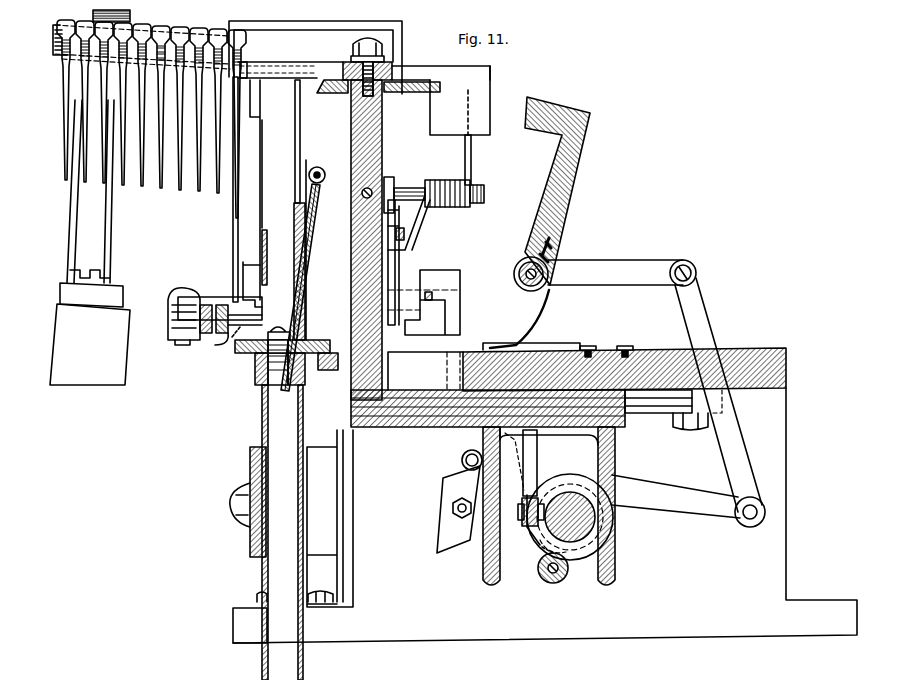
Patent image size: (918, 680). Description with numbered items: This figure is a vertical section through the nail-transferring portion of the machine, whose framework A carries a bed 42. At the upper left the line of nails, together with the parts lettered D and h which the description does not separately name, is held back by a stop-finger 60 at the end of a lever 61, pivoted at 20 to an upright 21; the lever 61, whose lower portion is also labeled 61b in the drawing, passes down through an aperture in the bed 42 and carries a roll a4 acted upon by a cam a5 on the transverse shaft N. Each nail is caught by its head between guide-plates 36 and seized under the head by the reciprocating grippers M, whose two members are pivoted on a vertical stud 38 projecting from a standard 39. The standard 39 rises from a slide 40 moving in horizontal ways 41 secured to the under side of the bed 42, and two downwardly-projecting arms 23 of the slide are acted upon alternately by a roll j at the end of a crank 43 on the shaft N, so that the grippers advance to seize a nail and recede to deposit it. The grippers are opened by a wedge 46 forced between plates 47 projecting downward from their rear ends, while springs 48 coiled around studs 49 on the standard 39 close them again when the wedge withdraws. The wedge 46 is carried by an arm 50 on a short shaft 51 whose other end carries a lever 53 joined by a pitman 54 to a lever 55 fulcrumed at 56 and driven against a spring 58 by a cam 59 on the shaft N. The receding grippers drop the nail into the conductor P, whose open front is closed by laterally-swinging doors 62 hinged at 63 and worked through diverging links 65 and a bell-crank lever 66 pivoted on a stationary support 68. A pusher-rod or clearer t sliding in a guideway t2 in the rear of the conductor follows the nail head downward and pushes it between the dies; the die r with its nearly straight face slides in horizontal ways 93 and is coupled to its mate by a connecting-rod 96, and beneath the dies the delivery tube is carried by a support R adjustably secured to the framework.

The needle row D is at (160, 25).
The needle butts h is at (130, 16).
The framework A is at (378, 331).
The stop-finger 60 is at (315, 22).
The conductor P is at (269, 208).
The laterally-swinging doors 62 is at (252, 174).
The reciprocating grippers M is at (292, 72).
The guide-plates 36 is at (248, 64).
The lever 61 is at (400, 56).
The rod 61b is at (537, 454).
The vertical stud 38 is at (343, 92).
The standard 39 is at (352, 150).
The plates 47 is at (460, 100).
The springs 48 is at (471, 160).
The horizontal supporting-studs 49 is at (484, 194).
The arm 50 is at (562, 214).
The wedge 46 is at (536, 118).
The short shaft 51 is at (514, 282).
The lever 53 is at (622, 273).
The pitman 54 is at (720, 402).
The lever 55 is at (676, 496).
The bed 42 is at (760, 388).
The slide 40 is at (433, 395).
The horizontal ways 41 is at (665, 414).
The spring 58 is at (522, 328).
The upright 21 is at (418, 240).
The pivot 20 is at (432, 290).
The downwardly-projecting arms 23 is at (483, 570).
The transverse shaft N is at (574, 482).
The roll j is at (555, 583).
The cam a5 is at (578, 562).
The roll a4 is at (522, 508).
The cam 59 is at (529, 530).
The crank 43 is at (540, 548).
The fulcrum 56 is at (462, 462).
The support R is at (250, 535).
The horizontal ways 93 is at (256, 365).
The connecting-rod 96 is at (328, 372).
The die r is at (276, 340).
The pusher-rod or clearer t is at (306, 300).
The guideway t2 is at (322, 242).
The hinges 63 is at (258, 250).
The bell-crank lever 66 is at (218, 297).
The diverging links 65 is at (214, 345).
The stationary support 68 is at (235, 340).